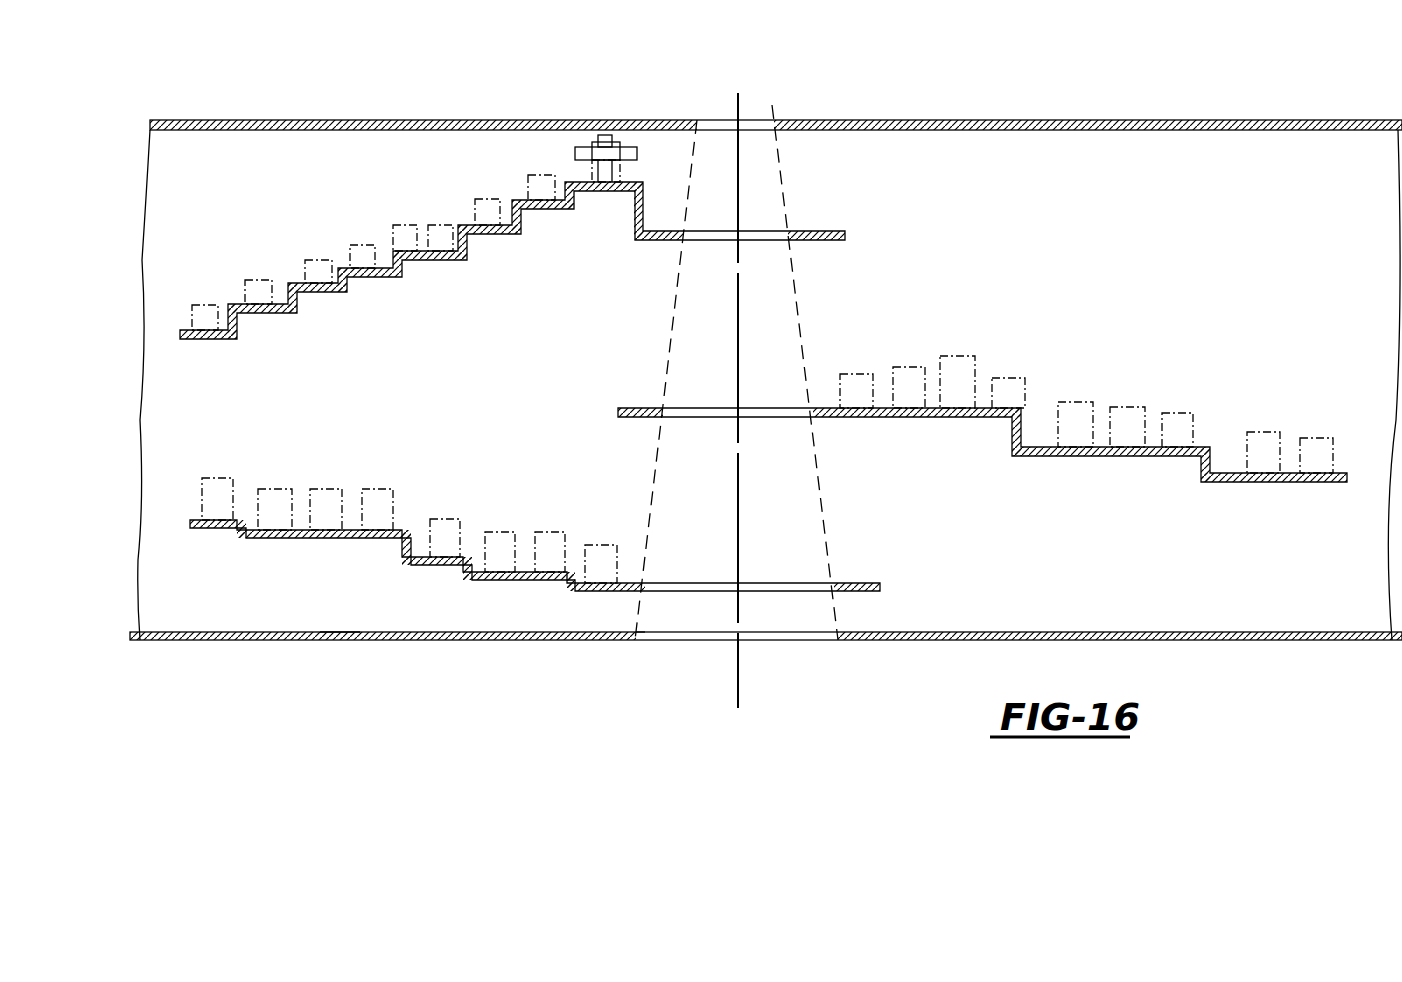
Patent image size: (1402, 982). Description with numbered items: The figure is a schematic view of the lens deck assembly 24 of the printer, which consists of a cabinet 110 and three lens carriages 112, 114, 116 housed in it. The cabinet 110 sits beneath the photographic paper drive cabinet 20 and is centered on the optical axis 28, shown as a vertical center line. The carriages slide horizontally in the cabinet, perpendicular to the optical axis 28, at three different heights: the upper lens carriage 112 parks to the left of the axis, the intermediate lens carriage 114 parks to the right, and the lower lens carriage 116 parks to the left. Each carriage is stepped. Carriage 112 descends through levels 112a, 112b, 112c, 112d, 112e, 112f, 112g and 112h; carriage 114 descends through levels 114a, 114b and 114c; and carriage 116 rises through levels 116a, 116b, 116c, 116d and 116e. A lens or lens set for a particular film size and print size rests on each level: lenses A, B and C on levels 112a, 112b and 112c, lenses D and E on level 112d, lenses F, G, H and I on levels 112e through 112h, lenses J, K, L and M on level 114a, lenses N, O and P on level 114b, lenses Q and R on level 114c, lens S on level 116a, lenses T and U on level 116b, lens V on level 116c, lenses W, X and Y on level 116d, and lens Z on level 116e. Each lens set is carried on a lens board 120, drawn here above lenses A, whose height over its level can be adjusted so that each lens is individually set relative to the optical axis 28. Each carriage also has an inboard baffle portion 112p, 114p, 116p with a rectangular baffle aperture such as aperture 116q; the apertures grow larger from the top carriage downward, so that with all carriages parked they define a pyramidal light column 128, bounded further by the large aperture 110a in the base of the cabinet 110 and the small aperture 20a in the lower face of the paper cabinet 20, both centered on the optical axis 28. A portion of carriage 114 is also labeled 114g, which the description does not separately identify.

The photographic paper drive cabinet 20 is at (383, 58).
The aperture in lower face of paper cabinet 20a is at (690, 120).
The lens deck assembly 24 is at (337, 665).
The optical axis 28 is at (740, 155).
The cabinet 110 is at (545, 641).
The aperture in base of lens deck cabinet 110a is at (640, 636).
The lens carriage 112 is at (308, 175).
The level of carriage 112 112a is at (600, 192).
The level of carriage 112 112b is at (558, 210).
The level of carriage 112 112c is at (495, 235).
The level of carriage 112 112d is at (438, 261).
The level of carriage 112 112e is at (377, 278).
The level of carriage 112 112f is at (333, 293).
The level of carriage 112 112g is at (263, 314).
The level of carriage 112 112h is at (203, 341).
The inboard baffle portion 112p is at (830, 231).
The lens carriage 114 is at (1213, 370).
The level of carriage 114 114a is at (948, 418).
The level of carriage 114 114b is at (1137, 457).
The level of carriage 114 114c is at (1290, 483).
The bracket gap portion 114g is at (663, 414).
The inboard baffle portion 114p is at (620, 408).
The lens carriage 116 is at (518, 463).
The level of carriage 116 116a is at (600, 592).
The level of carriage 116 116b is at (500, 581).
The level of carriage 116 116c is at (432, 566).
The level of carriage 116 116d is at (315, 540).
The level of carriage 116 116e is at (200, 530).
The inboard baffle portion 116p is at (880, 584).
The baffle aperture 116q is at (828, 584).
The lens board 120 is at (577, 148).
The pyramidal light column 128 is at (783, 566).
The lenses A is at (603, 178).
The lenses B is at (540, 185).
The lenses C is at (487, 208).
The lenses D is at (440, 232).
The lenses E is at (405, 233).
The lenses F is at (360, 256).
The lenses G is at (315, 272).
The lenses H is at (262, 292).
The lenses I is at (200, 312).
The lenses J is at (858, 380).
The lenses K is at (908, 366).
The lenses L is at (955, 360).
The lenses M is at (1005, 382).
The lenses N is at (1072, 407).
The lens O is at (1120, 412).
The lenses P is at (1176, 418).
The lens Q is at (1260, 435).
The lenses R is at (1317, 443).
The lens S is at (603, 548).
The lens T is at (543, 537).
The lens U is at (497, 535).
The lens V is at (440, 522).
The lens W is at (373, 493).
The lens X is at (320, 493).
The lens Y is at (272, 493).
The lens Z is at (203, 480).